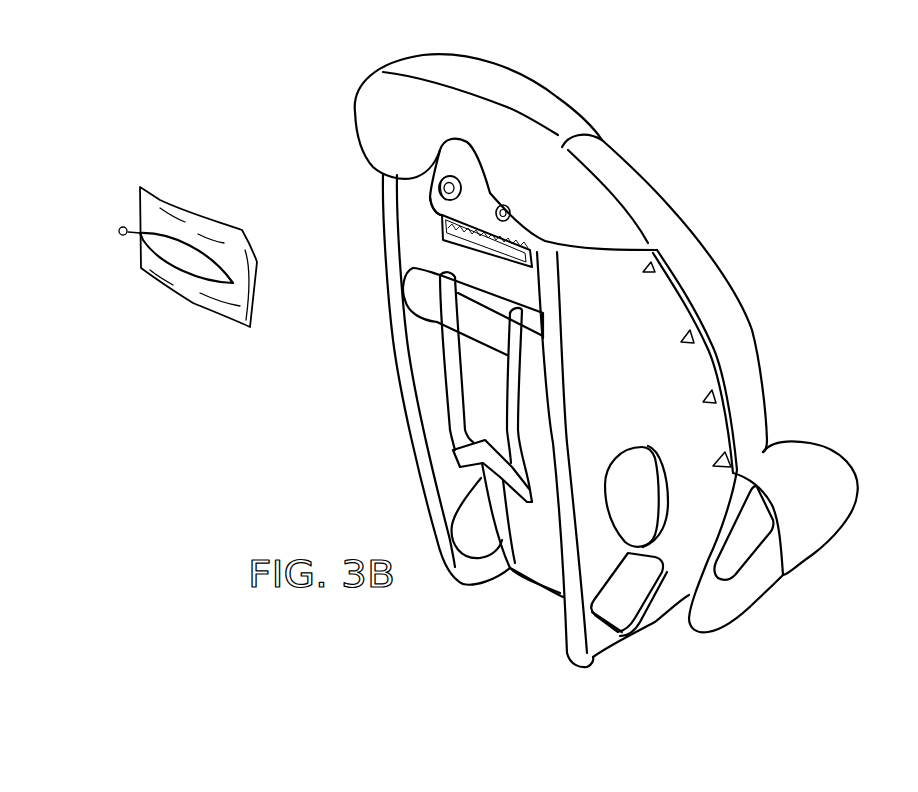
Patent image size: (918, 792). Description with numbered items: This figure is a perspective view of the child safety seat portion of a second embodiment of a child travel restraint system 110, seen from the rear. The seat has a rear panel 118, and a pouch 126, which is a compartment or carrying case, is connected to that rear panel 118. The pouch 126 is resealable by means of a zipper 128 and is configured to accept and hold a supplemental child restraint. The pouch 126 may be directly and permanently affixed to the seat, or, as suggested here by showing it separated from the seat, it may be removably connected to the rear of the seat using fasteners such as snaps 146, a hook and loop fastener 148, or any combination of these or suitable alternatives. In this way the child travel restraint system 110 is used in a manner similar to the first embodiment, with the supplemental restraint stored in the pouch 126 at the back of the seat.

The child travel restraint system 110 is at (352, 435).
The rear panel 118 is at (460, 256).
The pouch 126 is at (185, 290).
The zipper 128 is at (155, 255).
The snaps 146 is at (438, 188).
The hook and loop fastener 148 is at (437, 203).